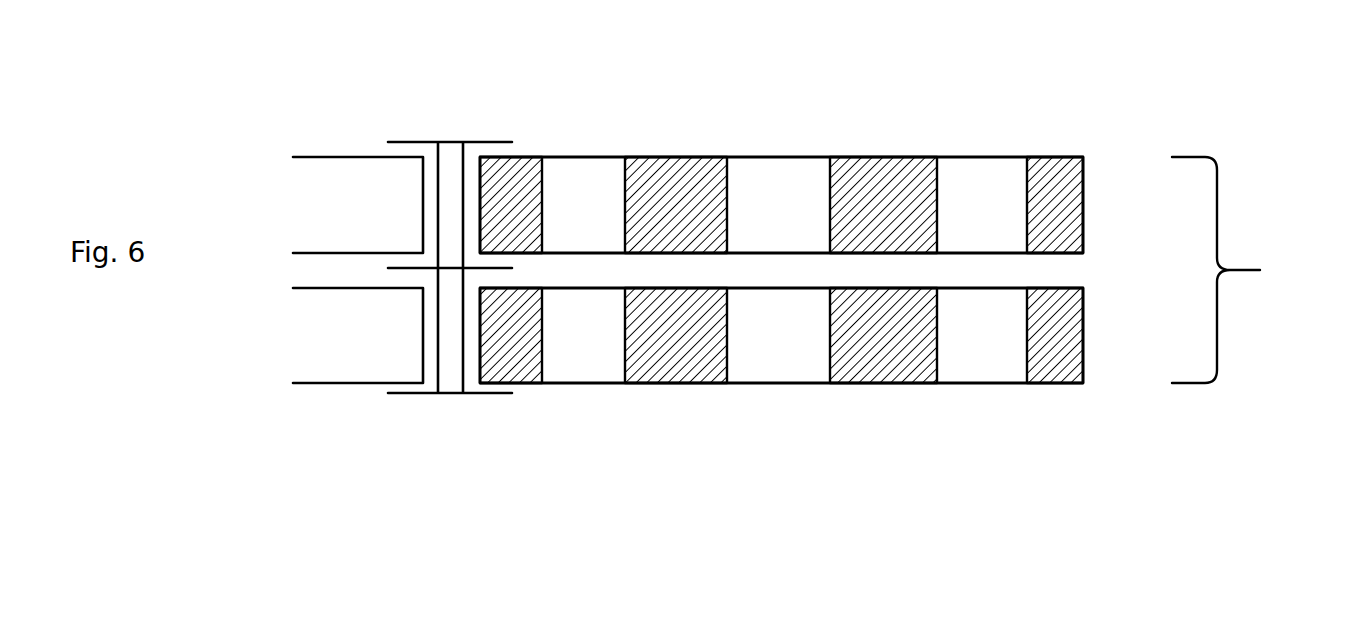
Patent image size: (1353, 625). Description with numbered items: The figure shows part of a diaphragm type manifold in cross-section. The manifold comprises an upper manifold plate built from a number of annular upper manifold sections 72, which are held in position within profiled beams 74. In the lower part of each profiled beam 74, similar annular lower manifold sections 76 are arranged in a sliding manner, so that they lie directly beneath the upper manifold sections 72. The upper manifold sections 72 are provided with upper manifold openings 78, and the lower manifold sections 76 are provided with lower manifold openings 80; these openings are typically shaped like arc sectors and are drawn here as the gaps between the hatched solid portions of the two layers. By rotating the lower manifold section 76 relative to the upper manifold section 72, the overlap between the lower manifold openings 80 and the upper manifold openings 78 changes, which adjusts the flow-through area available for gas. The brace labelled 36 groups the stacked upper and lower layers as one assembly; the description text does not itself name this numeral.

The heat exchanger assembly 36 is at (1253, 270).
The annular upper manifold section 72 is at (307, 153).
The profiled beam 74 is at (450, 143).
The annular lower manifold section 76 is at (327, 385).
The upper manifold opening 78 is at (982, 183).
The lower manifold opening 80 is at (978, 342).